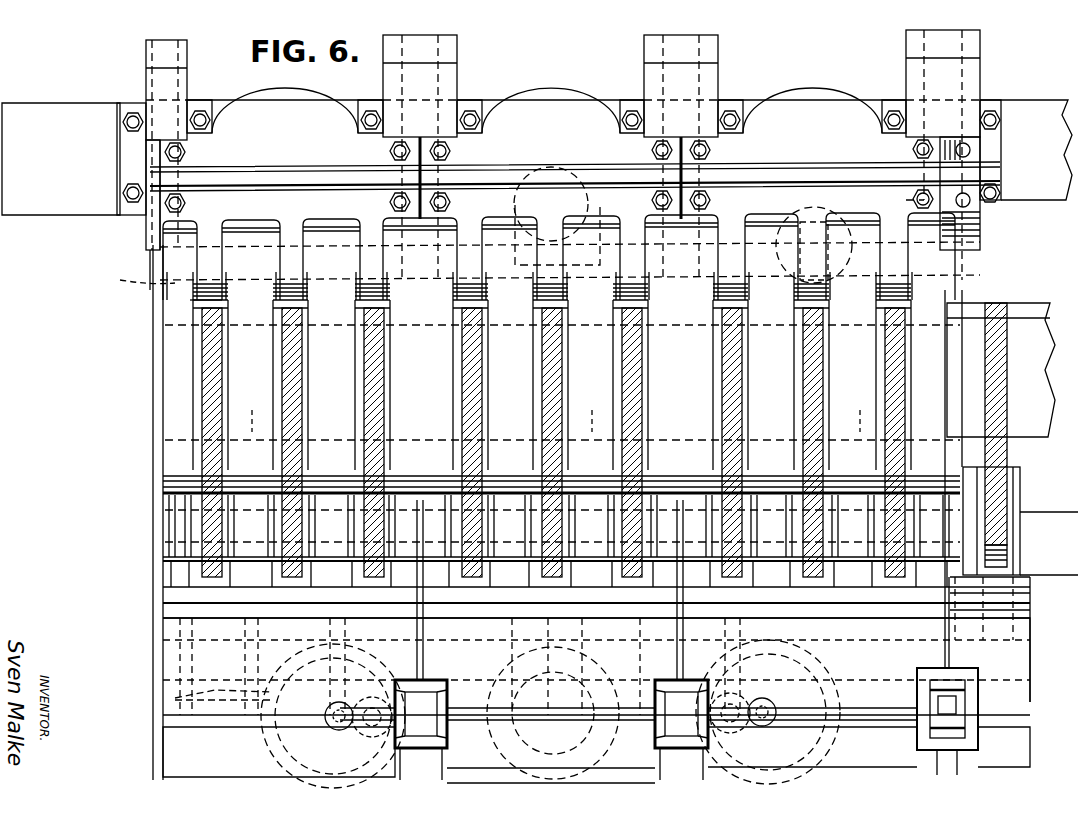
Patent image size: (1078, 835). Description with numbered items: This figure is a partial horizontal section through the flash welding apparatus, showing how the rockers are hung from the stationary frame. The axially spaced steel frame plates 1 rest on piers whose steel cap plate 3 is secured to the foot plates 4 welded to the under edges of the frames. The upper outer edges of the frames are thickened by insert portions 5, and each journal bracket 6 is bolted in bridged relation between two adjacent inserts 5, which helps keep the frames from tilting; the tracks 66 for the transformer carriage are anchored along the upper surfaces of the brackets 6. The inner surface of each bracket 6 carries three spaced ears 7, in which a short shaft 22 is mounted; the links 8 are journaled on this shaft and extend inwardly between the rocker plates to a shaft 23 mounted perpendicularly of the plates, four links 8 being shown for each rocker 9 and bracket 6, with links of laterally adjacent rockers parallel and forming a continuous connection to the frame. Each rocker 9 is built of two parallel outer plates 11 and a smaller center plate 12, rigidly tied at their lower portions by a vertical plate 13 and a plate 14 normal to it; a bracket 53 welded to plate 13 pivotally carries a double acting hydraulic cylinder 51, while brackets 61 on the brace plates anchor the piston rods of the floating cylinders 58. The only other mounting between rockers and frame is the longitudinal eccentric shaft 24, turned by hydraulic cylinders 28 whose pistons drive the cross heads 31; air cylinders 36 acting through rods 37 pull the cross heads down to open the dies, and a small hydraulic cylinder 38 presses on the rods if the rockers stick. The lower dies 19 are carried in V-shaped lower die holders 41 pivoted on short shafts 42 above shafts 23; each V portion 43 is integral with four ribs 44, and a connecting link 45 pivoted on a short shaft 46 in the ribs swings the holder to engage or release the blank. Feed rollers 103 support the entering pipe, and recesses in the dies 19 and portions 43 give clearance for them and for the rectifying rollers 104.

The frame plate 1 is at (180, 82).
The cap plate 3 is at (40, 108).
The foot plate 4 is at (124, 110).
The insert portion 5 is at (146, 54).
The journal bracket 6 is at (215, 205).
The ear 7 is at (282, 262).
The link 8 is at (236, 336).
The rocker member 9 is at (200, 372).
The outer plate 11 is at (210, 400).
The center plate 12 is at (292, 410).
The vertical plate 13 is at (1024, 305).
The plate 14 is at (1036, 430).
The lower die 19 is at (215, 640).
The short shaft 22 is at (852, 290).
The shaft 23 is at (557, 406).
The shaft 24 is at (1058, 514).
The hydraulic cylinder 28 is at (560, 680).
The cross head 31 is at (497, 655).
The air cylinder 36 is at (282, 740).
The rod 37 is at (330, 710).
The hydraulic cylinder 38 is at (532, 724).
The lower die holder 41 is at (170, 594).
The short shaft 42 is at (178, 508).
The V portion 43 is at (215, 622).
The rib 44 is at (172, 574).
The connecting link 45 is at (440, 600).
The short shaft 46 is at (170, 700).
The double acting hydraulic cylinder 51 is at (552, 196).
The bracket 53 is at (500, 190).
The double acting cylinder 58 is at (792, 238).
The bracket 61 is at (832, 244).
The track 66 is at (288, 180).
The feed roller 103 is at (398, 742).
The rectifying roller 104 is at (930, 680).